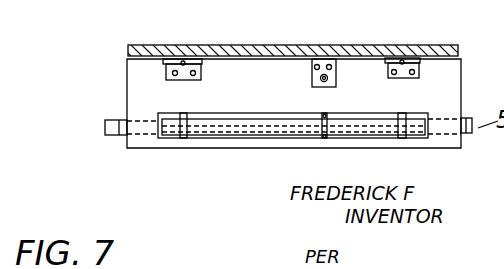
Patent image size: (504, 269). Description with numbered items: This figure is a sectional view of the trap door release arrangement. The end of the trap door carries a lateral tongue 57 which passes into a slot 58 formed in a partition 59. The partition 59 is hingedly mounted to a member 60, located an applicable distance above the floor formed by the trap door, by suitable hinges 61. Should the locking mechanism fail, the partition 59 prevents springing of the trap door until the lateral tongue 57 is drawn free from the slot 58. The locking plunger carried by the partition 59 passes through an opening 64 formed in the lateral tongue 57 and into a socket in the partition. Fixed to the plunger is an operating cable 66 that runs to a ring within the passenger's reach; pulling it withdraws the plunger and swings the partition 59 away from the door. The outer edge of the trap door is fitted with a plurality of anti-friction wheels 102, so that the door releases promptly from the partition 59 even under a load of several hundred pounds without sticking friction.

The lateral tongue 57 is at (262, 138).
The slot 58 is at (413, 113).
The partition 59 is at (137, 86).
The member 60 is at (292, 46).
The hinges 61 is at (188, 60).
The opening 64 is at (324, 139).
The operating cable 66 is at (322, 79).
The anti-friction wheels 102 is at (185, 139).